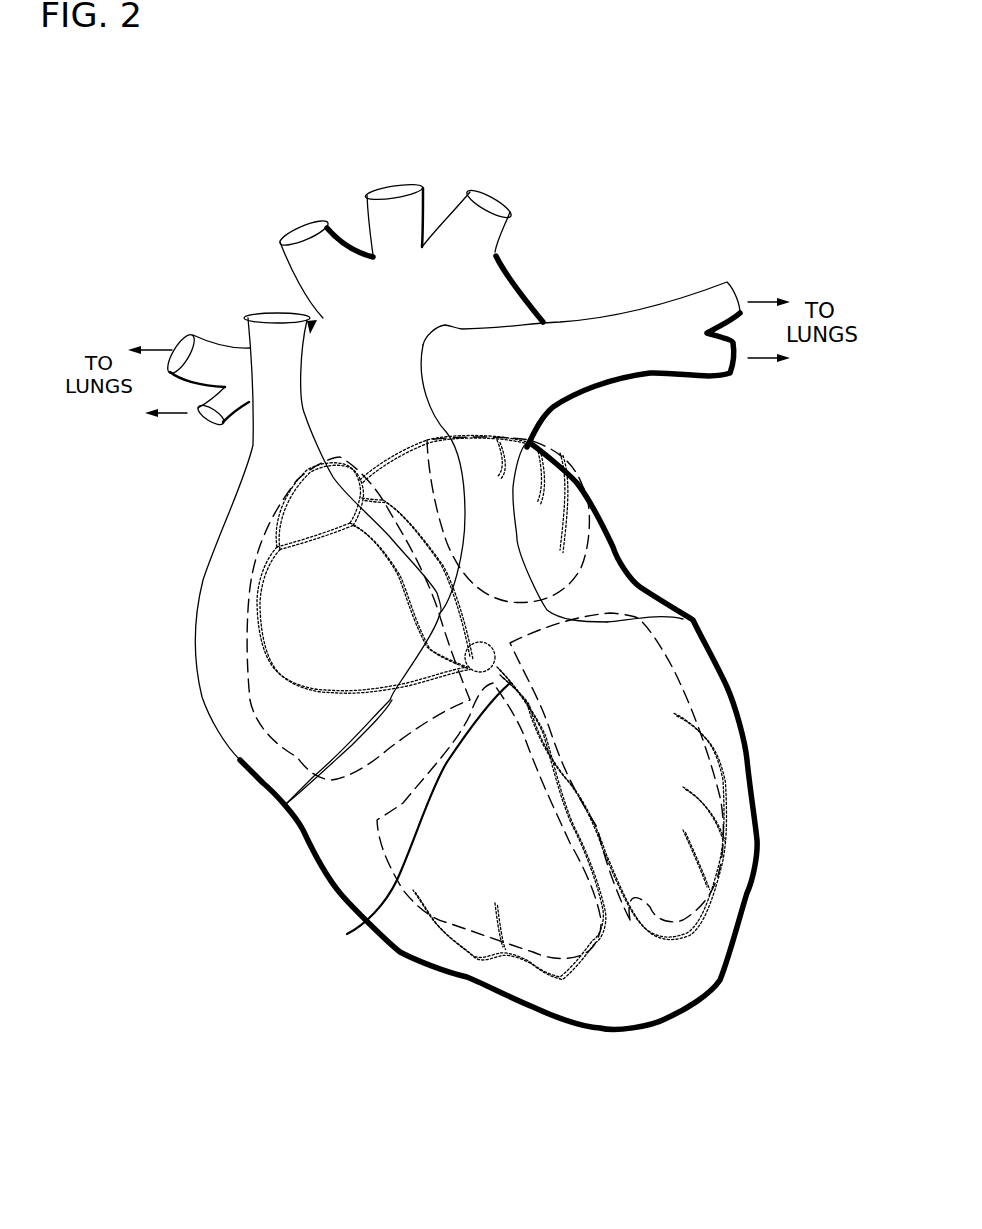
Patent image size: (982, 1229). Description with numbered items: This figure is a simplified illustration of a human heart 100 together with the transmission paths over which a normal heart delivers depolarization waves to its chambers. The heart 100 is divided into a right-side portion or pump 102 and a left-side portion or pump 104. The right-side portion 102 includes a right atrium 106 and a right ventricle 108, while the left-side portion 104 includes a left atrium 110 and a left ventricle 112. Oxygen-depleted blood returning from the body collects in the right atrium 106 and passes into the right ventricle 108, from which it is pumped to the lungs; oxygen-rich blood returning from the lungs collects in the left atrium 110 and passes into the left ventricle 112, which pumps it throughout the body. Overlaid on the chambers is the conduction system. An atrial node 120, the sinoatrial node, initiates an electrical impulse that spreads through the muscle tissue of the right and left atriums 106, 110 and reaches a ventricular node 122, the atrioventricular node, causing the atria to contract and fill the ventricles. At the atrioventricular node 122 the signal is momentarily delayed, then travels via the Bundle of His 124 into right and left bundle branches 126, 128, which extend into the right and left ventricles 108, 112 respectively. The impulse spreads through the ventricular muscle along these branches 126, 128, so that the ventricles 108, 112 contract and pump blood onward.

The heart 100 is at (224, 224).
The right-side portion 102 is at (250, 820).
The left-side portion 104 is at (740, 595).
The right atrium 106 is at (265, 697).
The right ventricle 108 is at (445, 922).
The left atrium 110 is at (588, 548).
The left ventricle 112 is at (693, 826).
The atrial node 120 is at (305, 512).
The ventricular node 122 is at (490, 643).
The Bundle of His 124 is at (347, 934).
The right bundle branch 126 is at (565, 810).
The left bundle branch 128 is at (580, 795).